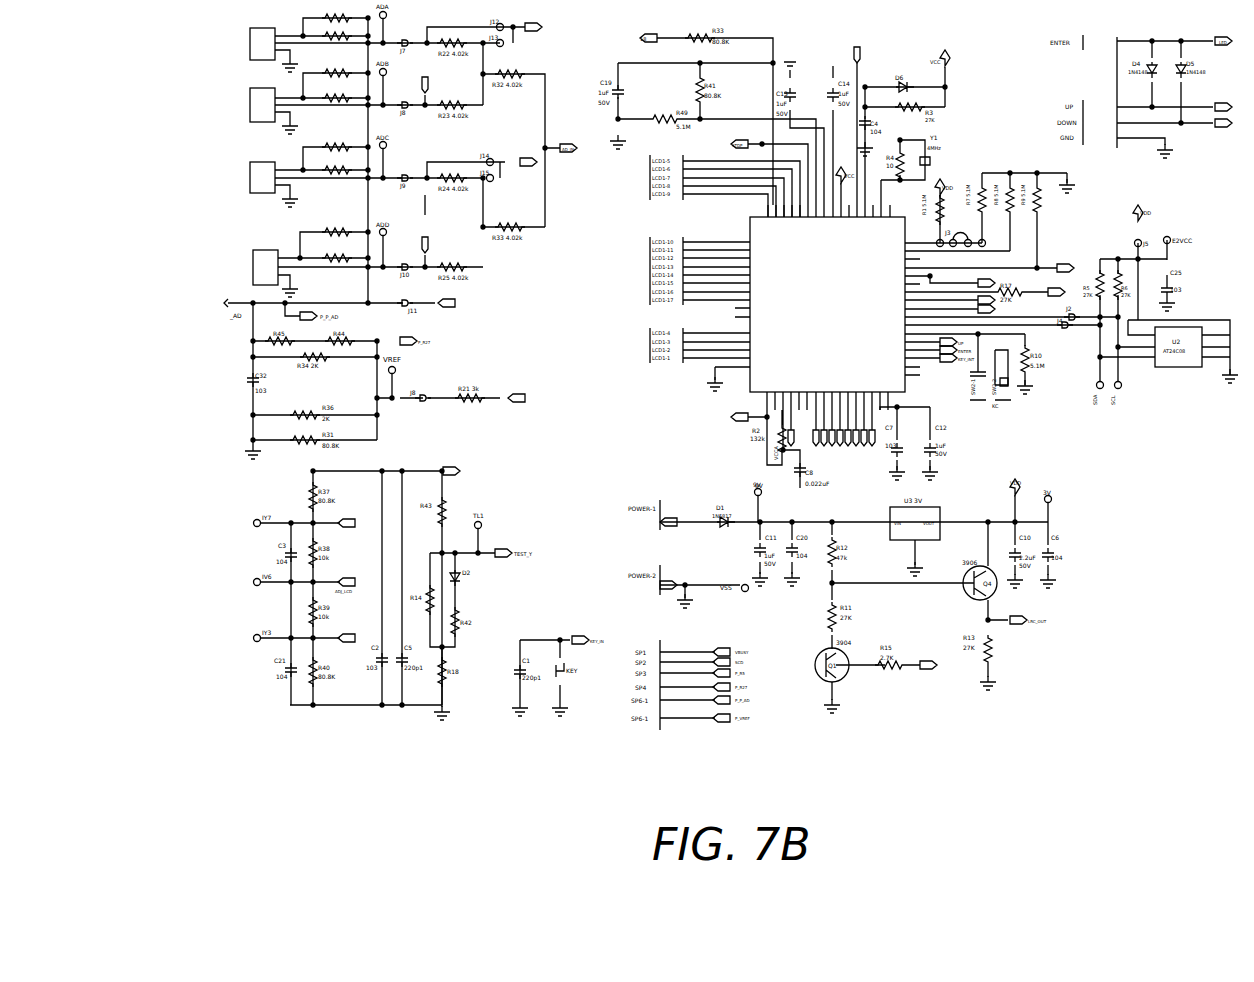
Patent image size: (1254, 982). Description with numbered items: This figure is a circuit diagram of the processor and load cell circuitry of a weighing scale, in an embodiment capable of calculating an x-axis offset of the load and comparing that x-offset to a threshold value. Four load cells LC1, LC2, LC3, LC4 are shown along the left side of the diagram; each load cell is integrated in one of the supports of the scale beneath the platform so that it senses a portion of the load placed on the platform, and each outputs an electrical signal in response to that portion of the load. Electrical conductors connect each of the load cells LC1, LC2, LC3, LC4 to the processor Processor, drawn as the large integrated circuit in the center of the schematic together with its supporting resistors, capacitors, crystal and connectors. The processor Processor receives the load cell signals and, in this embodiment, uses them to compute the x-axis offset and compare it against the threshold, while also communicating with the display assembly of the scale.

The load cell LC1 is at (232, 48).
The load cell LC2 is at (229, 117).
The load cell LC3 is at (226, 185).
The load cell LC4 is at (234, 273).
The processor Processor is at (703, 406).